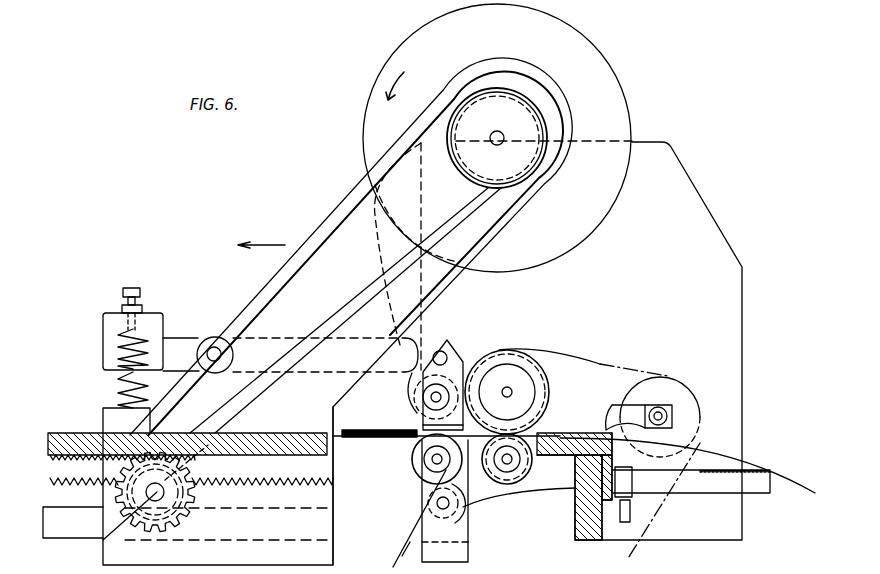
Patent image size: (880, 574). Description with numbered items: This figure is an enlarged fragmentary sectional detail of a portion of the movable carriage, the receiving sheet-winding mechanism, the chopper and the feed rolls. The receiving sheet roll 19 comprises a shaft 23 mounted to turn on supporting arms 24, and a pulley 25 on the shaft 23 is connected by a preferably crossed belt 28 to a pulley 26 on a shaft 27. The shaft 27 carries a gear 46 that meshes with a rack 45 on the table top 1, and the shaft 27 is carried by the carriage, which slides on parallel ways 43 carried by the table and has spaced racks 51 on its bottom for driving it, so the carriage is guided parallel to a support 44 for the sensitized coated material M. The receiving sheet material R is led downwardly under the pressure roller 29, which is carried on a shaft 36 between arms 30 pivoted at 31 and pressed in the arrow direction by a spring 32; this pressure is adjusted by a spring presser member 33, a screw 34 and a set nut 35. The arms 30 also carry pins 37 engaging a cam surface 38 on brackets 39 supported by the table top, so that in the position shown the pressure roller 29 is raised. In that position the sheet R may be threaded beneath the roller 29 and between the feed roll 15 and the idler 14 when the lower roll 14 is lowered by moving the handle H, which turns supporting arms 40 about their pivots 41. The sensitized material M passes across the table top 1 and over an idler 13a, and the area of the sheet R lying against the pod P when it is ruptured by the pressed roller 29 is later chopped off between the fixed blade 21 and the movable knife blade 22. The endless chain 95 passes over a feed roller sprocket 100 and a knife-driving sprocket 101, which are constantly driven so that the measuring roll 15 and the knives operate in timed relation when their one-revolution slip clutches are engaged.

The supply roll 19 is at (585, 46).
The pulley 25 is at (549, 106).
The shaft 23 is at (499, 144).
The supporting arms 24 is at (345, 203).
The belt 28 is at (326, 291).
The receiving sheet material R is at (390, 268).
The screw 34 is at (133, 289).
The set nut 35 is at (122, 298).
The spring presser member 33 is at (122, 332).
The spring 32 is at (118, 378).
The pivot 31 is at (213, 347).
The supporting arms 30 is at (257, 338).
The rack 45 is at (50, 448).
The table top 1 is at (283, 433).
The sensitized material M is at (183, 437).
The pod P is at (355, 432).
The pulley 26 is at (183, 487).
The shaft 27 is at (160, 496).
The racks 51 is at (90, 486).
The parallel ways 43 is at (52, 538).
The gear 46 is at (103, 545).
The cam surface 38 is at (446, 362).
The pins 37 is at (441, 350).
The shaft 36 is at (441, 393).
The pressure roller 29 is at (410, 396).
The brackets 39 is at (413, 427).
The feed roll 15 is at (549, 380).
The feed roller sprocket 100 is at (510, 347).
The endless chain 95 is at (583, 358).
The idler 13a is at (425, 473).
The support 44 is at (362, 440).
The pivots 41 is at (452, 508).
The idler 14 is at (504, 484).
The supporting arms 40 is at (547, 490).
The knife-driving sprocket 101 is at (677, 392).
The movable knife blade 22 is at (616, 411).
The fixed blade 21 is at (606, 435).
The handle H is at (758, 490).